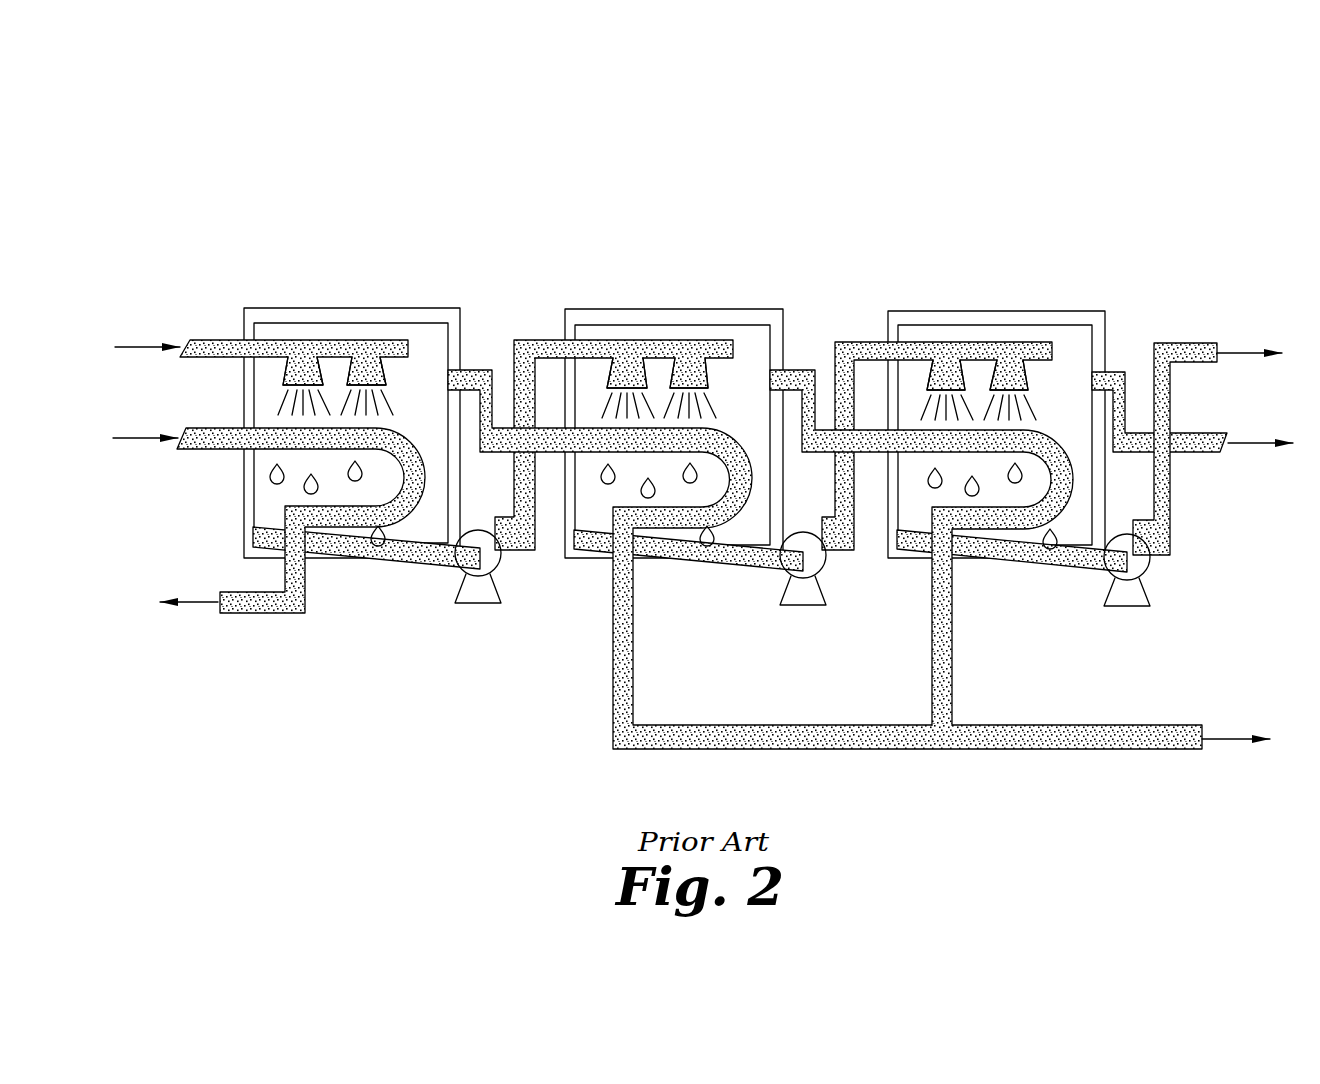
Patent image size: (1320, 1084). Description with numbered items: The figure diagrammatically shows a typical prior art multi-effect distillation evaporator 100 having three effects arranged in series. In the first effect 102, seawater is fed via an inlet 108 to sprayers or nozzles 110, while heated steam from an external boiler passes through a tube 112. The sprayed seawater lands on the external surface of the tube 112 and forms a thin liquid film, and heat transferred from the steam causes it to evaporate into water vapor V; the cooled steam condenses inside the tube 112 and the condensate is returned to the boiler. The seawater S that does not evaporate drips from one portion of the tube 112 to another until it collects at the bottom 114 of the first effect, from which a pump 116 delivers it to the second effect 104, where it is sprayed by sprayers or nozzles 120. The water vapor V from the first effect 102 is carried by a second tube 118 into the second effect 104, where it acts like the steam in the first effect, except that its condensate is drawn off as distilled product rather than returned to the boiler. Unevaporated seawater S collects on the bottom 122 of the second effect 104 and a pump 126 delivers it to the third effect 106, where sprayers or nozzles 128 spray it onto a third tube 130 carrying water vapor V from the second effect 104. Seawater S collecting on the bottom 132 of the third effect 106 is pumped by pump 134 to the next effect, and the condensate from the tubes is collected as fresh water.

The multi-effect distillation evaporator 100 is at (1167, 245).
The first effect 102 is at (367, 250).
The second effect 104 is at (728, 207).
The third effect 106 is at (1022, 267).
The inlet 108 is at (212, 340).
The sprayers or nozzles 110 is at (386, 372).
The tube 112 is at (195, 450).
The bottom of the first effect 114 is at (387, 568).
The pump 116 is at (503, 587).
The second tube 118 is at (477, 370).
The sprayers or nozzles 120 is at (630, 380).
The bottom of the second effect 122 is at (713, 569).
The pump 126 is at (820, 588).
The sprayers or nozzles 128 is at (954, 388).
The third tube 130 is at (806, 370).
The bottom of the third effect 132 is at (1043, 571).
The pump 134 is at (1149, 574).
The seawater S is at (282, 488).
The water vapor V is at (443, 382).